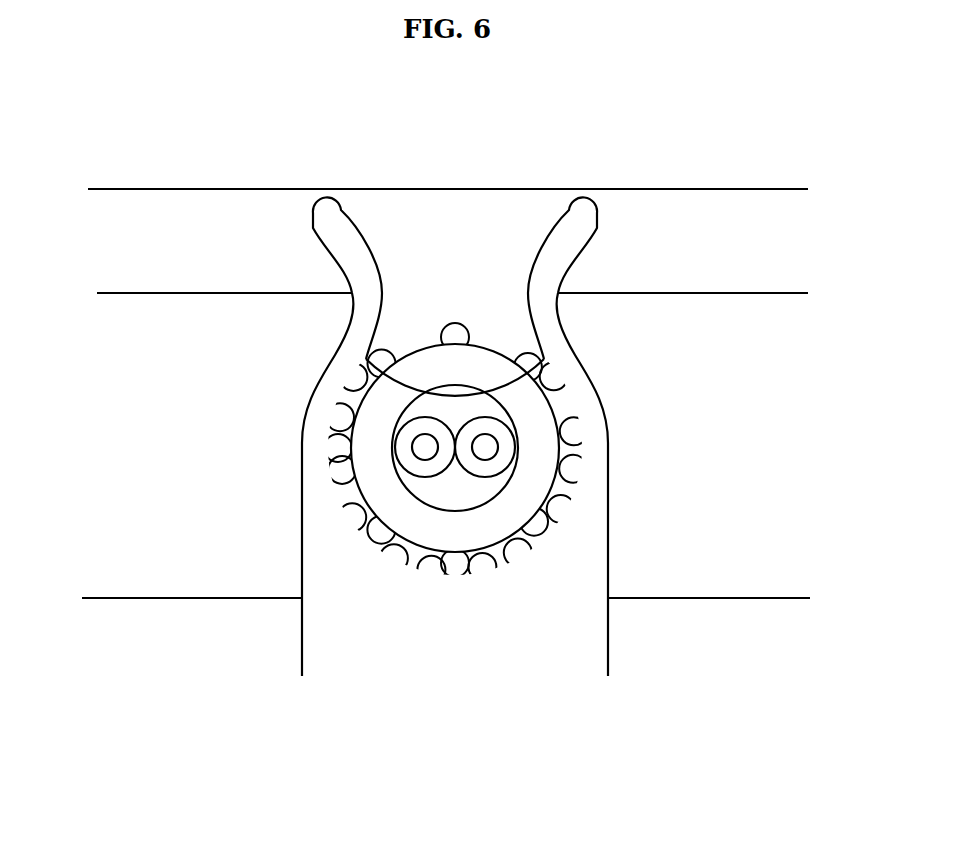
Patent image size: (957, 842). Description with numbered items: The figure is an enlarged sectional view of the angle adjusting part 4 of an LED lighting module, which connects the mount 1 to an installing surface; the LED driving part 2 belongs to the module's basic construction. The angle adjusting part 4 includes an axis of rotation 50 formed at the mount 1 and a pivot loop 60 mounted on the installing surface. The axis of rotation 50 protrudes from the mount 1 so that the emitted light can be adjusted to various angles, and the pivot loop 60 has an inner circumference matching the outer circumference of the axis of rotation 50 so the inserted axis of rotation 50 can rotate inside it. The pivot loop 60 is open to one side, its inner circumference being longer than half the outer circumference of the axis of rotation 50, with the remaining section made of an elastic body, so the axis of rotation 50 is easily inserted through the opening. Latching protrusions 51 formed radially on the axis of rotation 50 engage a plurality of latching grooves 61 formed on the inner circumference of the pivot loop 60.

The mount 1 is at (184, 589).
The LED driving part 2 is at (215, 212).
The angle adjusting part 4 is at (626, 359).
The axis of rotation 50 is at (428, 350).
The latching protrusion 51 is at (575, 468).
The pivot loop 60 is at (312, 413).
The latching groove 61 is at (581, 443).